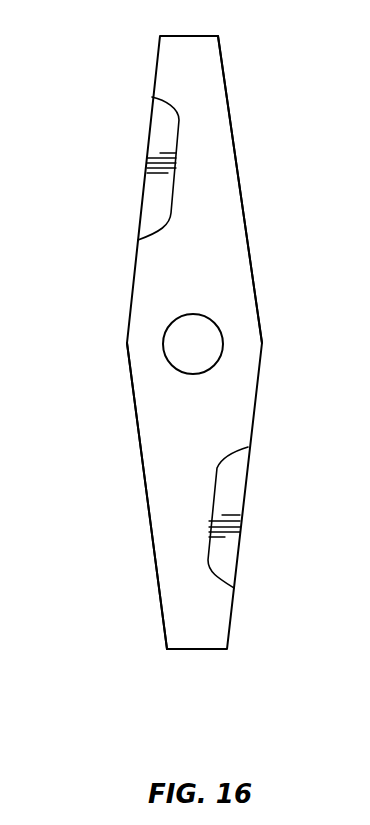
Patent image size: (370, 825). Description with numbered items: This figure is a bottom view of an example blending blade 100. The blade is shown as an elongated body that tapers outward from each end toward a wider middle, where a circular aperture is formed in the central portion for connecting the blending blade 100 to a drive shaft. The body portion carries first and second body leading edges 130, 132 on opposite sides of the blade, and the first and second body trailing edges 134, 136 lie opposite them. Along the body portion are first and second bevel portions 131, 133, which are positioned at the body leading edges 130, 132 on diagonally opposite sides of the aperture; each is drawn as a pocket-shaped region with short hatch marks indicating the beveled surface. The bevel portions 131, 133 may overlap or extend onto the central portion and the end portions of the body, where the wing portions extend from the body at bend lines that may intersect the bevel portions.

The blending blade 100 is at (277, 147).
The first body leading edge 130 is at (147, 123).
The first bevel portion 131 is at (156, 198).
The second body leading edge 132 is at (249, 467).
The second bevel portion 133 is at (236, 490).
The first body trailing edge 134 is at (245, 207).
The second body trailing edge 136 is at (147, 509).